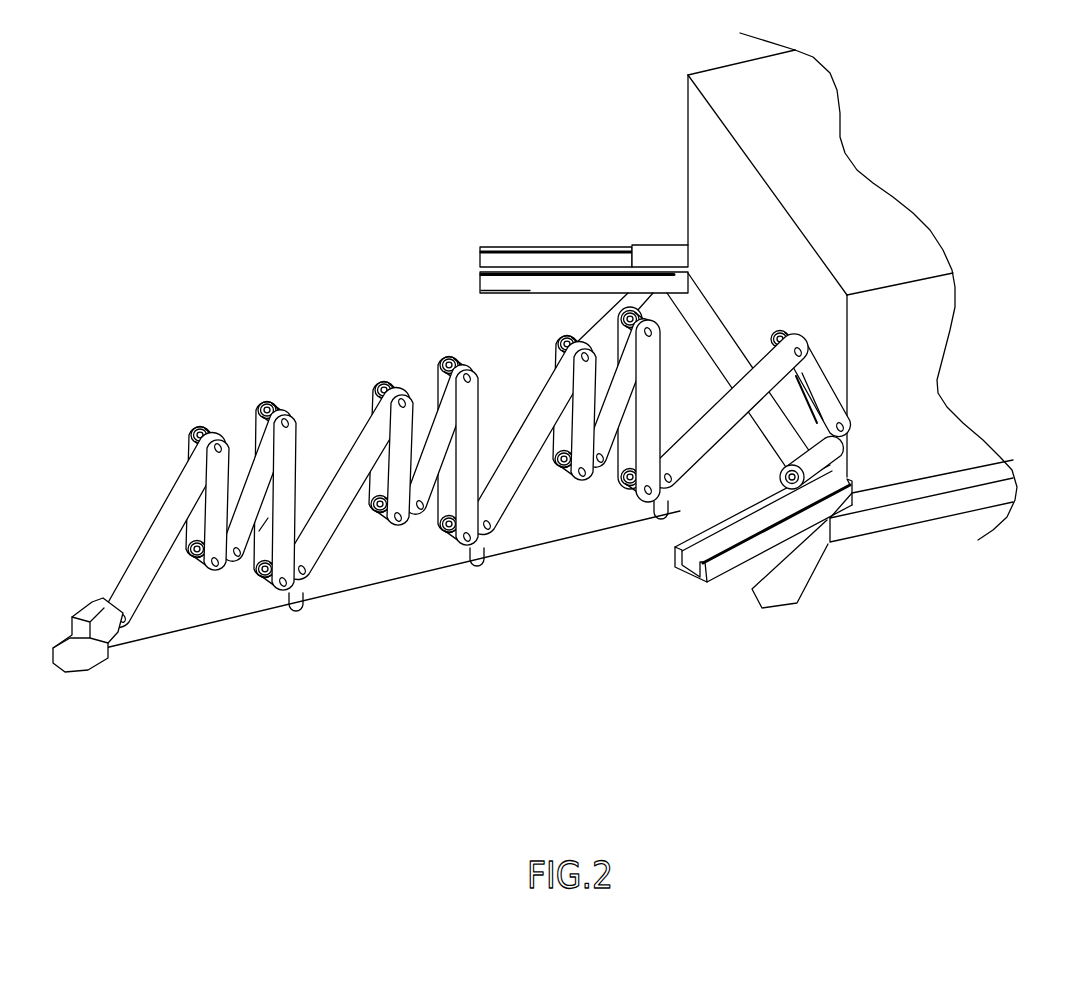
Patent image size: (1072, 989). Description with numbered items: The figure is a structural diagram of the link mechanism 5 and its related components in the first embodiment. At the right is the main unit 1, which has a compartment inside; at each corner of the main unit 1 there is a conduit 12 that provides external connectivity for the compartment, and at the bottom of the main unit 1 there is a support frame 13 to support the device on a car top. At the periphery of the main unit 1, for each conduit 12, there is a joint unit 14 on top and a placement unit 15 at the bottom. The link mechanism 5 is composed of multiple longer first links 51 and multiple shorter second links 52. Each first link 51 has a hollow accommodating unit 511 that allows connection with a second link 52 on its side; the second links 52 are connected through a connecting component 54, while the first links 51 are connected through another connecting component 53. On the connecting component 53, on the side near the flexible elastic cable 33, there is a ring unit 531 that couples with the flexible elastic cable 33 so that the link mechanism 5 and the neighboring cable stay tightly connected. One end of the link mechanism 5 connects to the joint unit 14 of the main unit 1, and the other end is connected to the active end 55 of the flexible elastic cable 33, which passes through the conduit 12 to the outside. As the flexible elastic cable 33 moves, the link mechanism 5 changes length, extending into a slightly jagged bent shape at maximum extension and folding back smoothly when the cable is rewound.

The main unit 1 is at (743, 80).
The link mechanism 5 is at (445, 499).
The conduit 12 is at (850, 460).
The support frame 13 is at (813, 582).
The joint unit 14 is at (843, 407).
The placement unit 15 is at (692, 568).
The flexible elastic cable 33 is at (390, 580).
The first link 51 is at (360, 440).
The accommodating unit 511 is at (267, 527).
The second link 52 is at (253, 450).
The connecting component 53 is at (264, 560).
The ring unit 531 is at (297, 603).
The connecting component 54 is at (382, 507).
The active end 55 is at (90, 658).